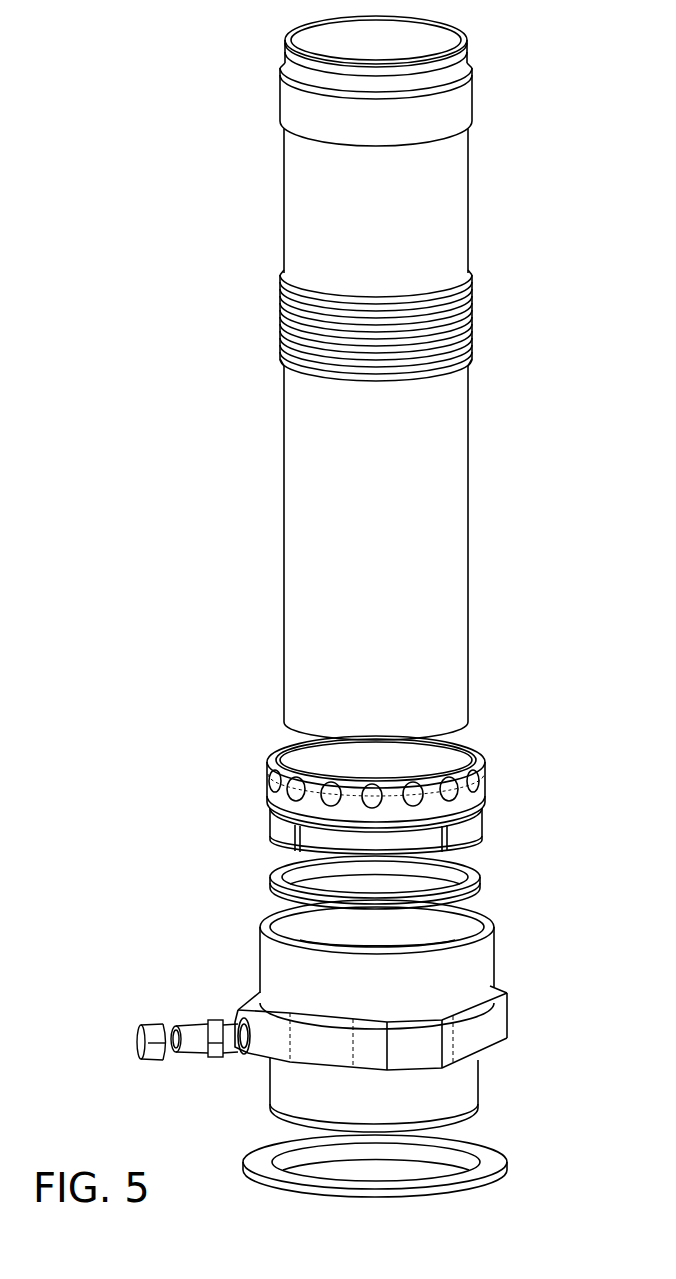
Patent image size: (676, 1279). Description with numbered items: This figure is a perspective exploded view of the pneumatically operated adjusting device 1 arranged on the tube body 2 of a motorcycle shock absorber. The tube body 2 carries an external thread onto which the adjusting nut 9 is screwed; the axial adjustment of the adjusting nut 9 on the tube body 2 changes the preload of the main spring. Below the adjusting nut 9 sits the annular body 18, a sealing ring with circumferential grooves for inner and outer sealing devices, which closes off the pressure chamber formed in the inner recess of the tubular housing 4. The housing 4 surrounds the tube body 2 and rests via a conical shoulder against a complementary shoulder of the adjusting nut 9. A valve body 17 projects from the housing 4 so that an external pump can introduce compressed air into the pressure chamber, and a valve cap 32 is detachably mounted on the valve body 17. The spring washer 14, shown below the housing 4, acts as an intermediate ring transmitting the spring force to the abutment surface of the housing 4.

The adjusting device 1 is at (545, 937).
The damper device tube body 2 is at (303, 433).
The housing 4 is at (285, 1087).
The adjusting nut 9 is at (277, 825).
The spring washer 14 is at (253, 1160).
The valve body 17 is at (192, 1035).
The annular body 18 is at (273, 870).
The valve cap 32 is at (133, 1035).